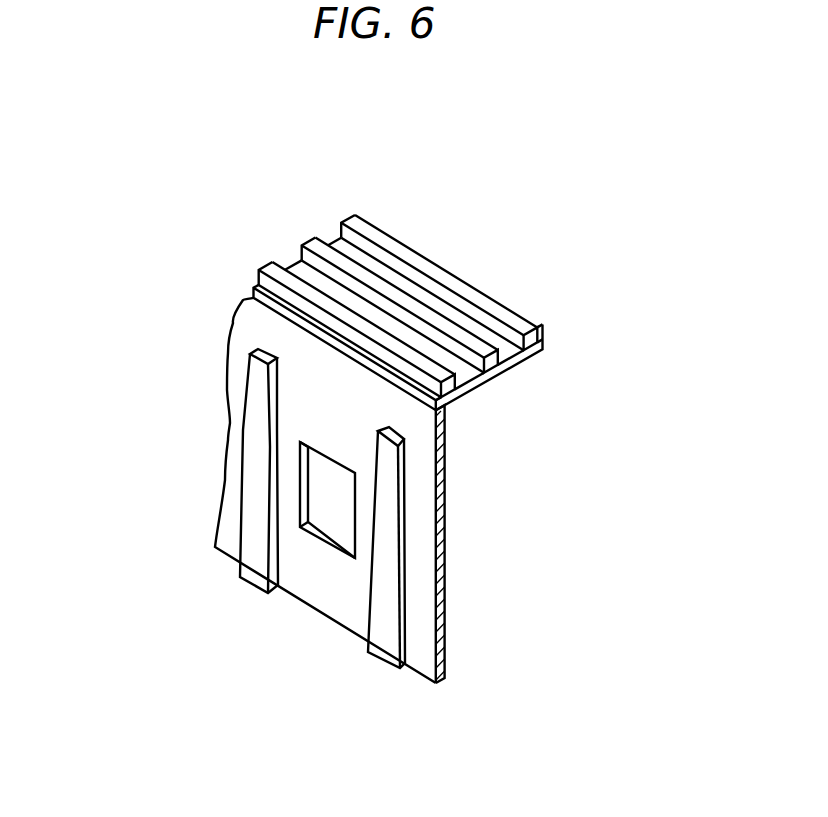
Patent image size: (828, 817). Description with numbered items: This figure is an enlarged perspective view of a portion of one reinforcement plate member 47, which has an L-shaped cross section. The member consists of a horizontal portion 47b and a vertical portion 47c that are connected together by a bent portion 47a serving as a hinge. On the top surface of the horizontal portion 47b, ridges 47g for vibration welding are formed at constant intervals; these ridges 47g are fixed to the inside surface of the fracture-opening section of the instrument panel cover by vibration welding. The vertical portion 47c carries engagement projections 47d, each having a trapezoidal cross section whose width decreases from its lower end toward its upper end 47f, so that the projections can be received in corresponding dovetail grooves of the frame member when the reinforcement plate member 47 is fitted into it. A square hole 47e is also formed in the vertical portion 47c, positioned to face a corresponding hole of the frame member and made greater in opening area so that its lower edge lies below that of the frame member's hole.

The reinforcement plate member 47 is at (243, 190).
The bent portion 47a is at (377, 377).
The horizontal portion 47b is at (498, 384).
The vertical portion 47c is at (423, 630).
The engagement projection 47d is at (385, 612).
The square hole 47e is at (323, 482).
The upper end 47f is at (253, 352).
The ridge 47g is at (437, 300).